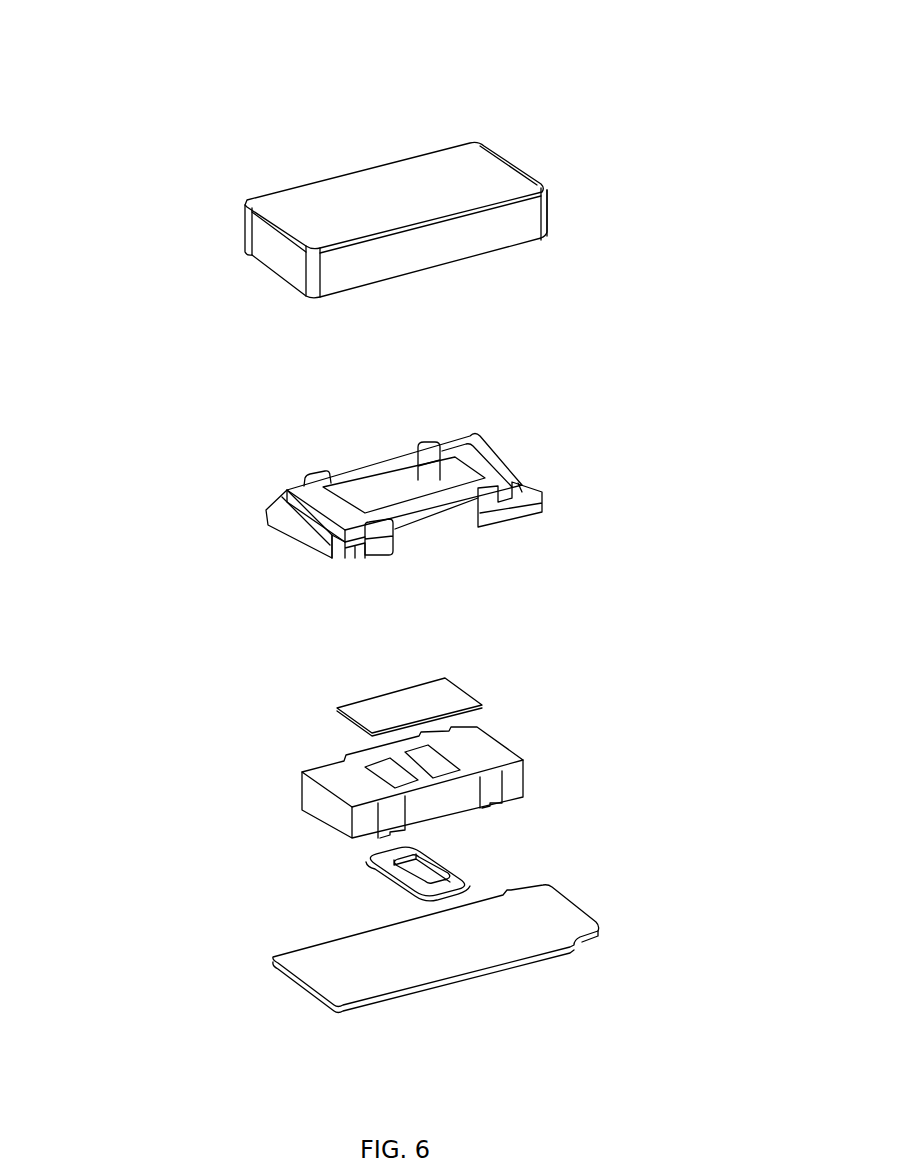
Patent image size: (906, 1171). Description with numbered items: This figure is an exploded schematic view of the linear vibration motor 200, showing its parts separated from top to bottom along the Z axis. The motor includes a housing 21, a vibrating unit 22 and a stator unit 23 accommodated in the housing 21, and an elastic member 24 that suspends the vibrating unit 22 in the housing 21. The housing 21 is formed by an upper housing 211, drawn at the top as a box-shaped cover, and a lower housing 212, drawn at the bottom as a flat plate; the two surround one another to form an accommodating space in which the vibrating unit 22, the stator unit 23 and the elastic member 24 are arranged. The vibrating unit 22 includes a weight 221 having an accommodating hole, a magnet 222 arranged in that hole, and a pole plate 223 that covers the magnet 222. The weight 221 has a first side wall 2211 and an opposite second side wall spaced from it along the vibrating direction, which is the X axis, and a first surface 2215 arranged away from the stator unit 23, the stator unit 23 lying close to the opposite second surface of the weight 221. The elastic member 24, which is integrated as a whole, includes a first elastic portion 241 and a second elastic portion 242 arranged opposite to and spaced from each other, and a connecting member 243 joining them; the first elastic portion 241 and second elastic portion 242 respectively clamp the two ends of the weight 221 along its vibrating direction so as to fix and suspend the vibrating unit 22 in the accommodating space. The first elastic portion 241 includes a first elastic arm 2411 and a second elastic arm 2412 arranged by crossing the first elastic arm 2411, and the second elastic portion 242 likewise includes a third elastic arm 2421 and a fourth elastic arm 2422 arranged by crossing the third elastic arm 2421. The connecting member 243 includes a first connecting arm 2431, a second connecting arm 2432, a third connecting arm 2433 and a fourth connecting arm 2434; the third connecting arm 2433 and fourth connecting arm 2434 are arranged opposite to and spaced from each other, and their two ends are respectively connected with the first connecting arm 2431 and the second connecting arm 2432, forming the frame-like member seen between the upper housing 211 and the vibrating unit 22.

The linear vibration motor 200 is at (467, 55).
The housing 21 is at (72, 871).
The upper housing 211 is at (273, 258).
The lower housing 212 is at (347, 970).
The vibrating unit 22 is at (755, 685).
The weight 221 is at (529, 788).
The first side wall 2211 is at (360, 834).
The first surface 2215 is at (343, 781).
The magnet 222 is at (447, 765).
The pole plate 223 is at (453, 692).
The stator unit 23 is at (427, 855).
The elastic member 24 is at (720, 345).
The first elastic portion 241 is at (656, 415).
The first elastic arm 2411 is at (518, 460).
The second elastic arm 2412 is at (534, 487).
The second elastic portion 242 is at (656, 520).
The third elastic arm 2421 is at (352, 535).
The fourth elastic arm 2422 is at (358, 550).
The connecting member 243 is at (656, 296).
The first connecting arm 2431 is at (475, 462).
The second connecting arm 2432 is at (330, 503).
The third connecting arm 2433 is at (385, 465).
The fourth connecting arm 2434 is at (422, 497).